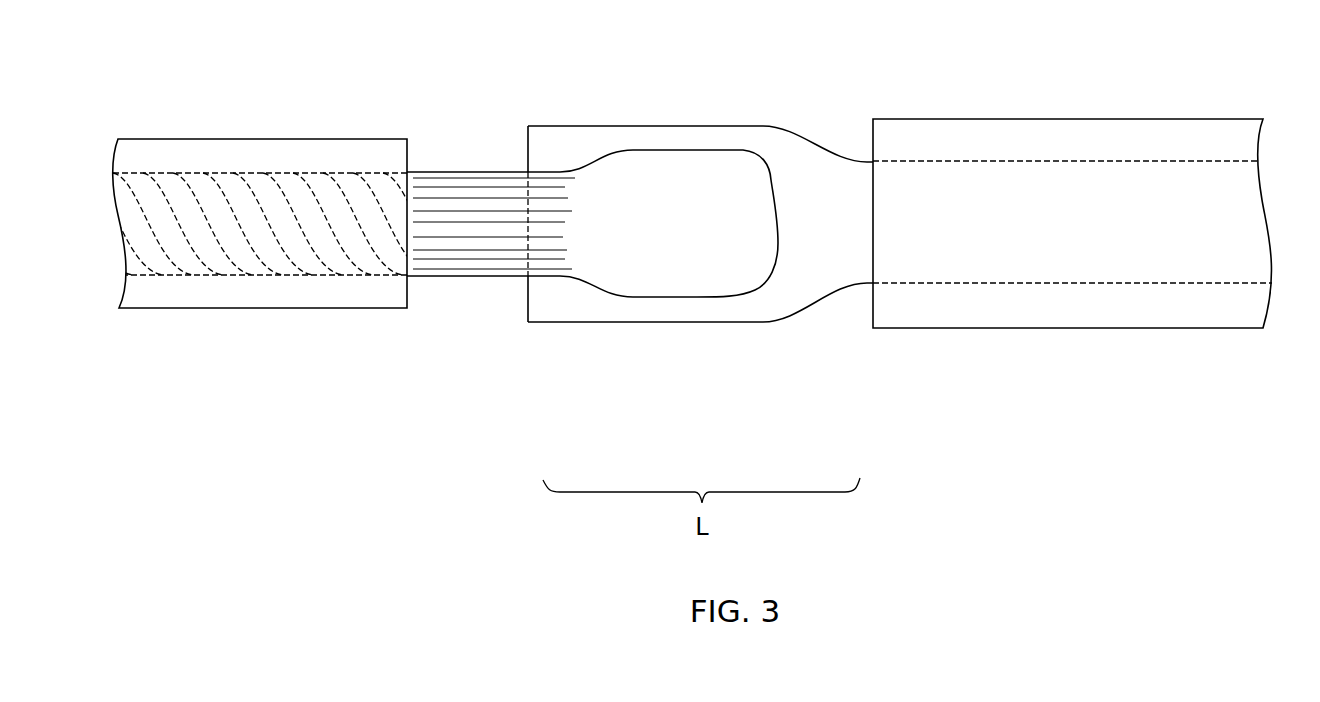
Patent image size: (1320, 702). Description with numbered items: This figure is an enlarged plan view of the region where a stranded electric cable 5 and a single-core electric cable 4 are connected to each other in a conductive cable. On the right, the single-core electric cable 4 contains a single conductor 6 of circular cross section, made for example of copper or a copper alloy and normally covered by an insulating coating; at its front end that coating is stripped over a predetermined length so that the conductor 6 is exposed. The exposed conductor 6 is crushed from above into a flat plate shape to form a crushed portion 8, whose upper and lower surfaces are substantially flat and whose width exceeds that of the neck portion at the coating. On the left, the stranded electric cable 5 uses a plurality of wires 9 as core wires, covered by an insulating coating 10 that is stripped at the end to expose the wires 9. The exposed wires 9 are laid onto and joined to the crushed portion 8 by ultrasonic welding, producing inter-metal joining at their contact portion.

The single-core electric cable 4 is at (998, 315).
The stranded electric cable 5 is at (351, 302).
The conductor 6 is at (965, 182).
The crushed portion 8 is at (693, 126).
The wires 9 is at (460, 193).
The coating 10 is at (206, 139).